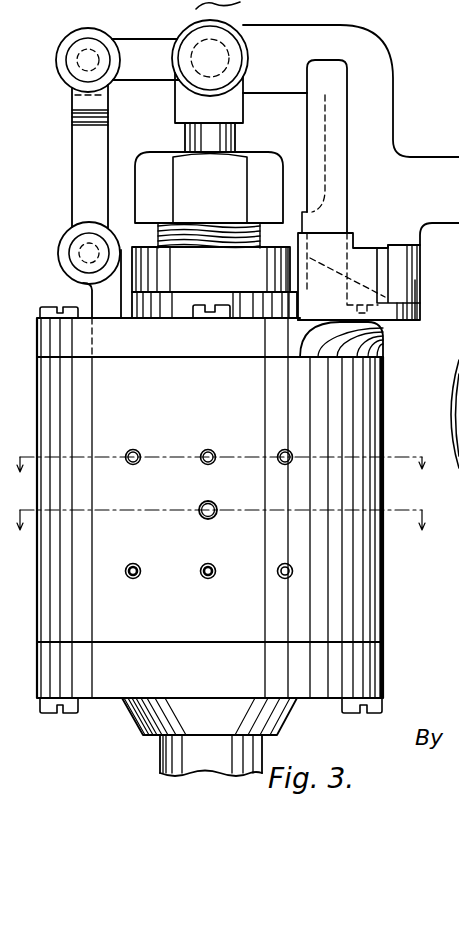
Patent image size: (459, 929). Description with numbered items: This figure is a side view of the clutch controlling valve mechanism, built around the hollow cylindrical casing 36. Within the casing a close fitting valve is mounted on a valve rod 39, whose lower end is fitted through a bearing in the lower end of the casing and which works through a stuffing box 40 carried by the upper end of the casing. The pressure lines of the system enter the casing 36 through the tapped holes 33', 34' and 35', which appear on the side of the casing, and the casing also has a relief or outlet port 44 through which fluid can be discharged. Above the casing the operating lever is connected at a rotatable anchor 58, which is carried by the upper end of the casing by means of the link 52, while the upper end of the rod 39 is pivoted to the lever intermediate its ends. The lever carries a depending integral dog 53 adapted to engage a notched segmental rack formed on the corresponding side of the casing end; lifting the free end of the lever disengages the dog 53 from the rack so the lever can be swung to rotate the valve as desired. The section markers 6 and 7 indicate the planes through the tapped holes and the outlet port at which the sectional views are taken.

The hollow cylindrical casing 36 is at (392, 387).
The tapped holes 33' is at (137, 503).
The tapped holes 34' is at (280, 504).
The tapped holes 35' is at (209, 503).
The relief or outlet port 44 is at (214, 506).
The valve rod 39 is at (235, 138).
The stuffing box 40 is at (143, 240).
The link 52 is at (72, 162).
The dog 53 is at (403, 268).
The rotatable anchor 58 is at (100, 297).
The section line 6- 6 is at (219, 478).
The section line 7- 7 is at (219, 535).